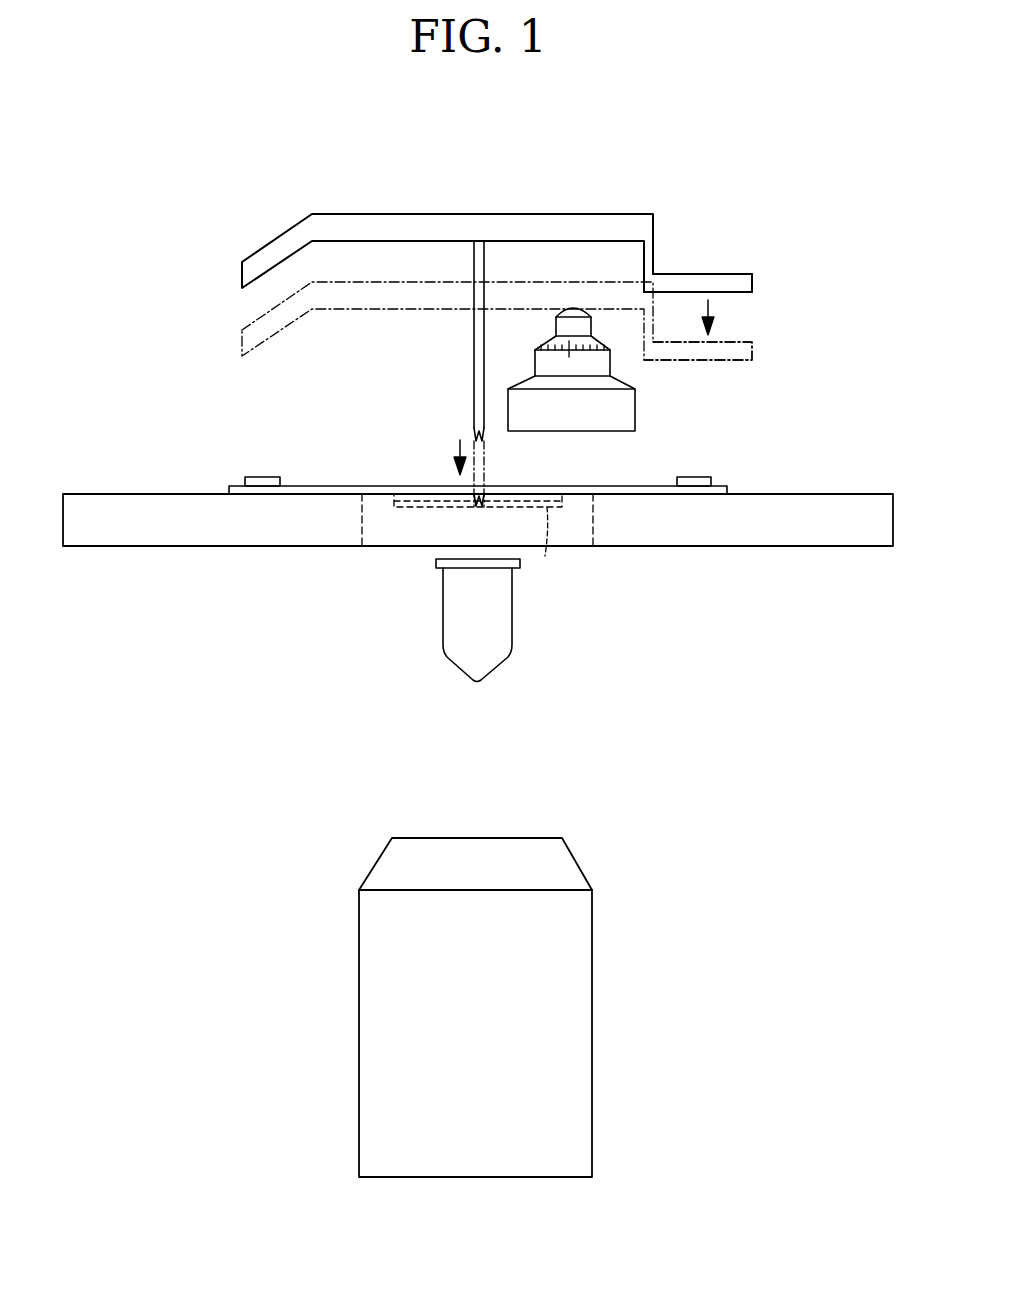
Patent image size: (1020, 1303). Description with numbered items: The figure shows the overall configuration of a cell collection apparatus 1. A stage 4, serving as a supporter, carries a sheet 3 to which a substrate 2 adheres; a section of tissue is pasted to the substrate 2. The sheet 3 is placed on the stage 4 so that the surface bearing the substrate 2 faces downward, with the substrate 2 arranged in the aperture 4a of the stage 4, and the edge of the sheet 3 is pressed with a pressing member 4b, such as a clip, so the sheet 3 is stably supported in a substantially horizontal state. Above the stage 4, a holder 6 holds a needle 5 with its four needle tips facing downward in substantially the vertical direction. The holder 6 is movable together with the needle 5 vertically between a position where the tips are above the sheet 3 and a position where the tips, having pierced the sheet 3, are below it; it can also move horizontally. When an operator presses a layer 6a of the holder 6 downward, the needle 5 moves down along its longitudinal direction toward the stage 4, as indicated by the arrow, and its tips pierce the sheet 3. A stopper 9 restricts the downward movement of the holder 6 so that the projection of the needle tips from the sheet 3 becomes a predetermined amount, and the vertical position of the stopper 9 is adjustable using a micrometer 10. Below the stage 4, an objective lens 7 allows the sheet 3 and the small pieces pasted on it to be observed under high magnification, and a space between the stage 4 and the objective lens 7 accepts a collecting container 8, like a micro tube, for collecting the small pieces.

The cell collection apparatus 1 is at (630, 185).
The substrate 2 is at (562, 500).
The sheet 3 is at (337, 486).
The stage 4 is at (146, 494).
The aperture 4a is at (362, 530).
The pressing member 4b is at (263, 477).
The needle 5 is at (474, 359).
The holder 6 is at (391, 214).
The layer 6a is at (706, 274).
The objective lens 7 is at (592, 995).
The collecting container 8 is at (512, 630).
The stopper 9 is at (558, 312).
The micrometer 10 is at (610, 366).